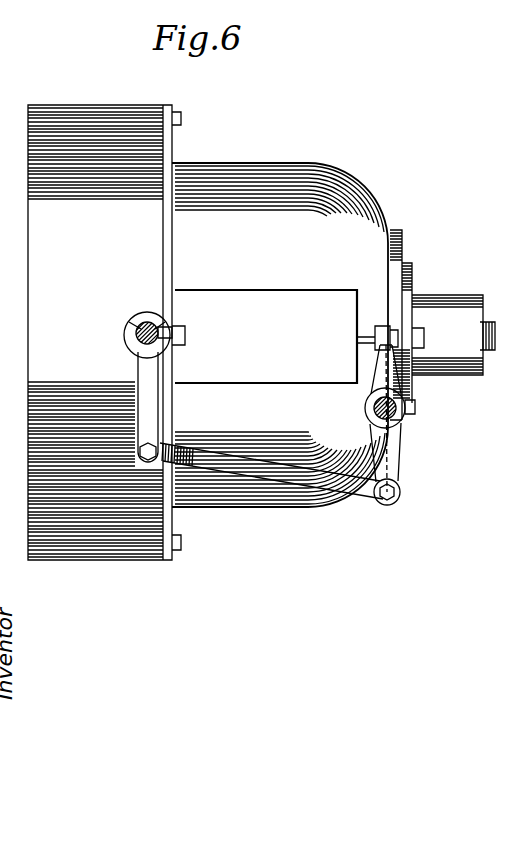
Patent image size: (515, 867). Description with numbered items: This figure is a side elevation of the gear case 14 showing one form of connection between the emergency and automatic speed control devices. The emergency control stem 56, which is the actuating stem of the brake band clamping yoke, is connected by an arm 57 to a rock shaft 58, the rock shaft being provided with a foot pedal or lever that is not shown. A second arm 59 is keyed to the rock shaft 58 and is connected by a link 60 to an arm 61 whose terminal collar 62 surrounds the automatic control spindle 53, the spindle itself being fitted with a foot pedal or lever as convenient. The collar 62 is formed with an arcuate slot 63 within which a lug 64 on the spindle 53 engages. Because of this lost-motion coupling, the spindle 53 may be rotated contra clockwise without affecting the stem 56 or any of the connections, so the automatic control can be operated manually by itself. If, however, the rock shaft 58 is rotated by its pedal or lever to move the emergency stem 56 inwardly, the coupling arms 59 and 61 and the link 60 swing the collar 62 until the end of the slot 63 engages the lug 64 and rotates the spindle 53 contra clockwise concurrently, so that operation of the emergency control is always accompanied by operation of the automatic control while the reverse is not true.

The gear case 14 is at (280, 174).
The automatic control spindle 53 is at (138, 333).
The actuating stem 56 is at (365, 335).
The arm 57 is at (382, 370).
The rock shaft 58 is at (405, 414).
The arm 59 is at (400, 450).
The link 60 is at (302, 480).
The arm 61 is at (152, 386).
The terminal collar 62 is at (128, 344).
The arcuate slot 63 is at (143, 315).
The lug 64 is at (165, 330).